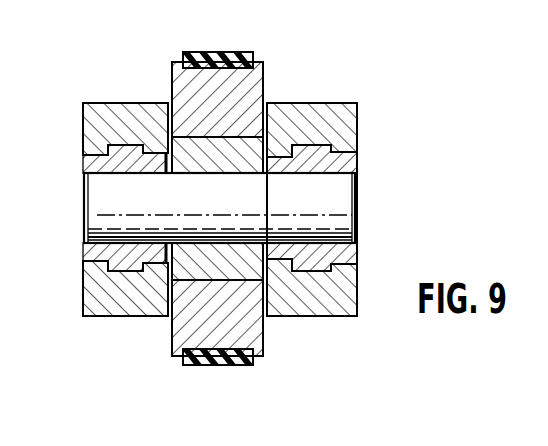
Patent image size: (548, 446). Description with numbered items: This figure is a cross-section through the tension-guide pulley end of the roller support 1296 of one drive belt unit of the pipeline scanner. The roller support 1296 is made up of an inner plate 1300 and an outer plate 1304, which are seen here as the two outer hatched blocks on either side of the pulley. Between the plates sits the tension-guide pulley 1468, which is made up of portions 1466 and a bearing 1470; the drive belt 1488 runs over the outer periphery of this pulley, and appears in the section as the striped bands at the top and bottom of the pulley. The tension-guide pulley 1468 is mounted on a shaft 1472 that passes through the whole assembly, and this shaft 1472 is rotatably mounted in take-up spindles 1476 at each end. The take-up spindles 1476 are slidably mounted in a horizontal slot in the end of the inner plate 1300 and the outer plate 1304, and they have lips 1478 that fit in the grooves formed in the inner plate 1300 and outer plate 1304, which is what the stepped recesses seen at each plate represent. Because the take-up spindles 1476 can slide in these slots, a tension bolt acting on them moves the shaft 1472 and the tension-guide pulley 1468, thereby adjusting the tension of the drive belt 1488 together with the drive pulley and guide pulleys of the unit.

The roller support 1296 is at (402, 171).
The inner plate 1300 is at (352, 113).
The outer plate 1304 is at (102, 300).
The portions 1466 is at (228, 102).
The tension-guide pulley 1468 is at (268, 72).
The bearing 1470 is at (272, 143).
The shaft 1472 is at (343, 222).
The take-up spindles 1476 is at (106, 250).
The lips 1478 is at (110, 279).
The drive belt 1488 is at (239, 53).